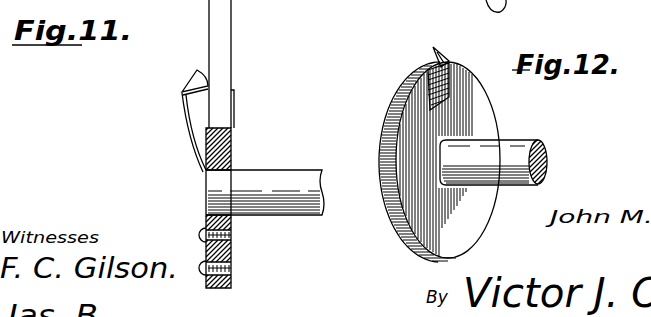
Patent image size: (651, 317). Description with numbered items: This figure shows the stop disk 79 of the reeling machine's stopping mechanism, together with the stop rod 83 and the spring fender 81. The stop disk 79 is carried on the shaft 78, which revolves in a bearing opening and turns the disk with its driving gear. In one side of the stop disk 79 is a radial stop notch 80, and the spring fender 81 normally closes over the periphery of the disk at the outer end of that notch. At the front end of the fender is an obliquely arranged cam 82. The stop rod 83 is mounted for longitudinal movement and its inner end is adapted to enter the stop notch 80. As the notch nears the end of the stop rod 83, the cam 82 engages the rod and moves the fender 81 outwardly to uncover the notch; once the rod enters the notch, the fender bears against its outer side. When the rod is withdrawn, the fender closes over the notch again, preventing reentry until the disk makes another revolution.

In FIG. 11, the shaft 78 is at (302, 176).
In FIG. 12, the shaft 78 is at (529, 140).
In FIG. 11, the stop disk 79 is at (225, 251).
In FIG. 12, the stop disk 79 is at (465, 234).
In FIG. 11, the radial stop notch 80 is at (234, 107).
In FIG. 12, the radial stop notch 80 is at (437, 88).
In FIG. 11, the spring fender 81 is at (192, 132).
In FIG. 11, the cam 82 is at (194, 80).
In FIG. 12, the cam 82 is at (436, 60).
In FIG. 11, the stop rod 83 is at (223, 33).